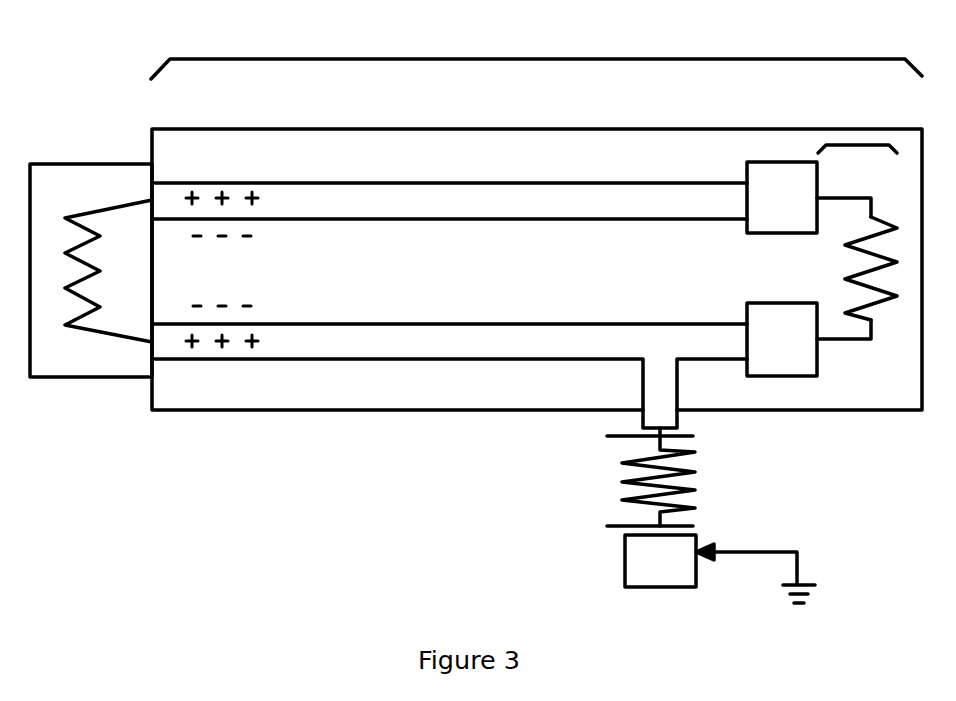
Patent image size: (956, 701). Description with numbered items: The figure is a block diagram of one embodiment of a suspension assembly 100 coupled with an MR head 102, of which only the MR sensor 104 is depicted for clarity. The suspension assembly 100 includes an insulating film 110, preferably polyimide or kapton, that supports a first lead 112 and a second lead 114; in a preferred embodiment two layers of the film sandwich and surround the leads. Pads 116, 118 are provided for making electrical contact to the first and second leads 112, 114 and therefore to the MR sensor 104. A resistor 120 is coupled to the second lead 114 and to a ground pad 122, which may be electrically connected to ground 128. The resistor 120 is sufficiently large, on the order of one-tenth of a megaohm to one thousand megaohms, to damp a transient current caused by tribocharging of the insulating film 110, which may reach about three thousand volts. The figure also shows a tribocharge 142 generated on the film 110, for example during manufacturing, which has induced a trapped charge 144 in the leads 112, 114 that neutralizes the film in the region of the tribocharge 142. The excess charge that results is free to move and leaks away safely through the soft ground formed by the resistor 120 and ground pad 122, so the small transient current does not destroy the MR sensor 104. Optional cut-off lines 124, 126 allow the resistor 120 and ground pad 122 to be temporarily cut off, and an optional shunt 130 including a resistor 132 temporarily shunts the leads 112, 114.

The suspension assembly 100 is at (529, 59).
The MR head 102 is at (47, 163).
The MR sensor 104 is at (65, 325).
The insulating film 110 is at (398, 126).
The first lead 112 is at (520, 183).
The second lead 114 is at (405, 359).
The pad 116 is at (765, 160).
The pad 118 is at (772, 376).
The resistor 120 is at (700, 455).
The ground pad 122 is at (650, 587).
The cut-off line 124 is at (607, 436).
The cut-off line 126 is at (607, 526).
The ground 128 is at (815, 585).
The shunt 130 is at (857, 145).
The resistor 132 is at (895, 296).
The tribocharge 142 is at (258, 235).
The trapped charge 144 is at (192, 188).